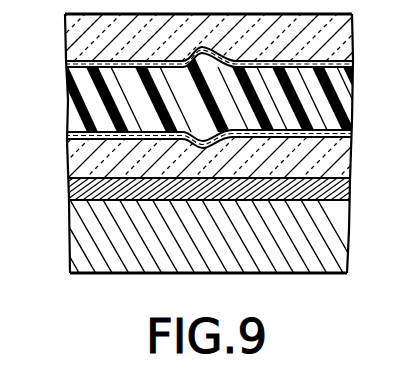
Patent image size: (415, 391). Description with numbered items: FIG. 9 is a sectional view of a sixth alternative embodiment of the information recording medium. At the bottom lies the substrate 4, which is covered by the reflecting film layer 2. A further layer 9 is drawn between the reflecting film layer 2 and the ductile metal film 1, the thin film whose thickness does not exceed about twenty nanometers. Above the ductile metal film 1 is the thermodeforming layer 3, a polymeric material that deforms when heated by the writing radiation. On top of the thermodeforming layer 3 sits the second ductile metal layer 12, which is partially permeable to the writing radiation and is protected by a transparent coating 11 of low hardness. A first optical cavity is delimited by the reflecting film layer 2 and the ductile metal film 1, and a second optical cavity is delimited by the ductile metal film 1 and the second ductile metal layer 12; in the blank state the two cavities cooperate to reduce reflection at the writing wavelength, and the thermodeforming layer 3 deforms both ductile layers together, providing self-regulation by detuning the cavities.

The ductile metal film 1 is at (67, 139).
The reflecting film layer 2 is at (347, 186).
The thermodeforming layer 3 is at (352, 92).
The substrate 4 is at (339, 236).
The layer 9 is at (347, 151).
The transparent coating 11 is at (352, 37).
The second ductile metal layer 12 is at (66, 67).